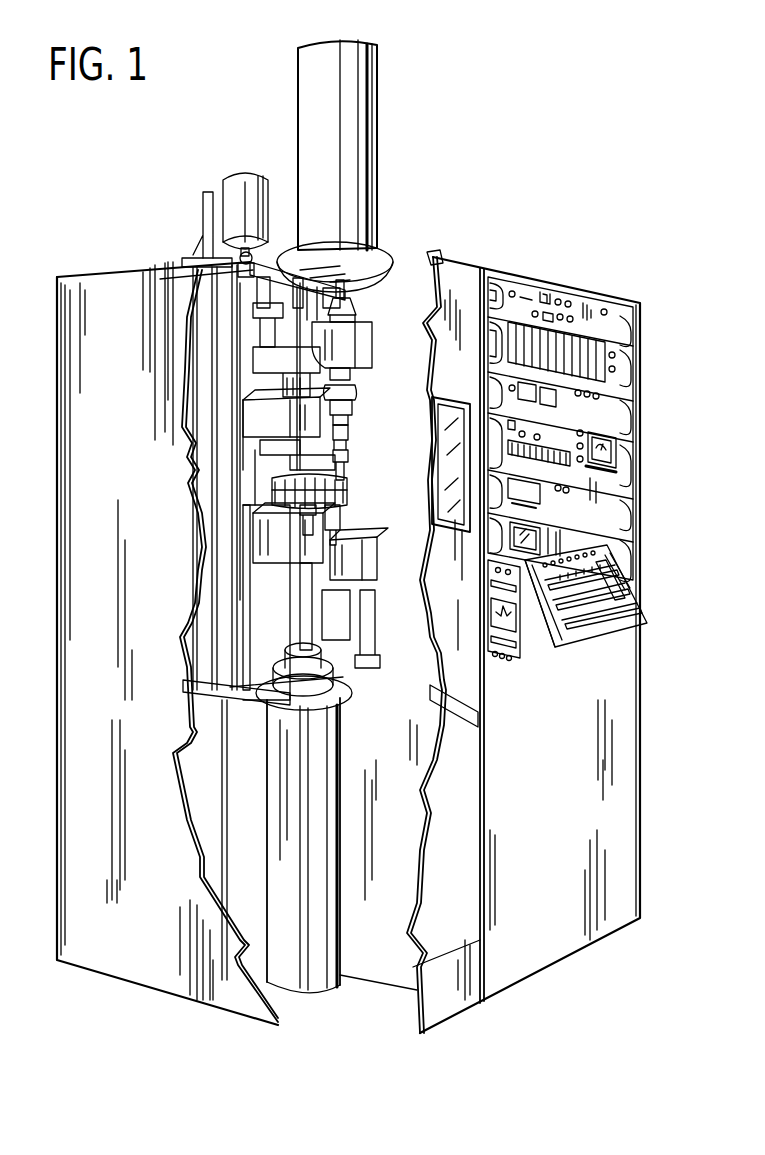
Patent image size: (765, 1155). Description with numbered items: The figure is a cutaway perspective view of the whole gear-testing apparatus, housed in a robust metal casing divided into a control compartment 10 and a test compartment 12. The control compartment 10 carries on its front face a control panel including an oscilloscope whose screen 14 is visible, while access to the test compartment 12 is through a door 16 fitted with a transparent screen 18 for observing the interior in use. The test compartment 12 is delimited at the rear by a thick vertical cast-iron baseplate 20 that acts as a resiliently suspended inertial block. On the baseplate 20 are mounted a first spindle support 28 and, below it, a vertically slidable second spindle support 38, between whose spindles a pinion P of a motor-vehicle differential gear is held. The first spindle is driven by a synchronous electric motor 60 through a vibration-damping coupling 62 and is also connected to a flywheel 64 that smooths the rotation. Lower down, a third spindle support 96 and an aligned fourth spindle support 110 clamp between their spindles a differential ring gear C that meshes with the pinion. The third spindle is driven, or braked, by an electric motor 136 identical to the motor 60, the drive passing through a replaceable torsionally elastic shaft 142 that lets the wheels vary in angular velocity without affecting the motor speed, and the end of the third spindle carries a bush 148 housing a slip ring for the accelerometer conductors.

The control compartment 10 is at (652, 527).
The test compartment 12 is at (217, 565).
The oscilloscope screen 14 is at (543, 523).
The door 16 is at (462, 272).
The transparent screen 18 is at (432, 425).
The baseplate 20 is at (243, 278).
The first spindle support 28 is at (383, 340).
The second spindle support 38 is at (383, 562).
The synchronous electric motor 60 is at (348, 103).
The coupling 62 is at (372, 262).
The flywheel 64 is at (352, 325).
The third spindle support 96 is at (263, 575).
The fourth spindle support 110 is at (244, 415).
The electric motor 136 is at (302, 788).
The shaft 142 is at (312, 633).
The bush 148 is at (245, 182).
The pinion P is at (344, 494).
The differential ring gear C is at (333, 503).